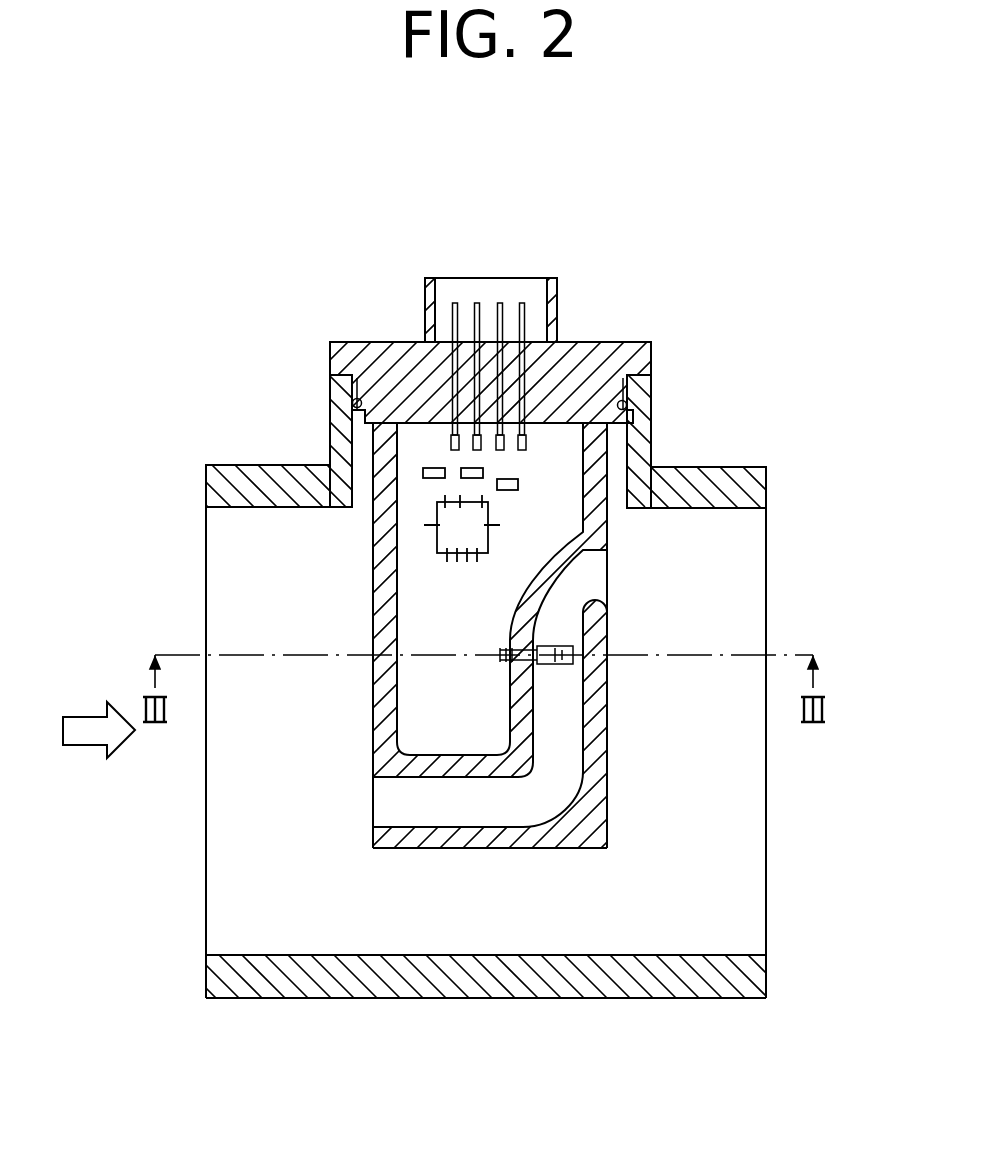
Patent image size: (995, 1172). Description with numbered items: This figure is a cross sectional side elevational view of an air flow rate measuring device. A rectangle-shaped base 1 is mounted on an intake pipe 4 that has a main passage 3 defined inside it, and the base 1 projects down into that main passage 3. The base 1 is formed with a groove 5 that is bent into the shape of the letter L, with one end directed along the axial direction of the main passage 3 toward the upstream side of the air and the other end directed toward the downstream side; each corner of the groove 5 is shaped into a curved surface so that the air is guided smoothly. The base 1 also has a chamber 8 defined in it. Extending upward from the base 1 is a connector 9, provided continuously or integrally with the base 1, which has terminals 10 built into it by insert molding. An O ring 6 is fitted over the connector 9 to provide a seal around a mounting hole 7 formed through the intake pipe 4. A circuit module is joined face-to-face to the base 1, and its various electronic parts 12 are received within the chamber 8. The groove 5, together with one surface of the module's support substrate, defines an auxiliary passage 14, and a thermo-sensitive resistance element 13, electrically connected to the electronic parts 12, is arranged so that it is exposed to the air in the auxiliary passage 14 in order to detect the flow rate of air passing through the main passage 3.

The base 1 is at (592, 826).
The main passage 3 is at (732, 510).
The intake pipe 4 is at (684, 467).
The groove 5 is at (440, 827).
The O ring 6 is at (352, 405).
The mounting hole 7 is at (630, 383).
The chamber 8 is at (400, 592).
The connector 9 is at (425, 303).
The terminals 10 is at (457, 303).
The electronic parts 12 is at (432, 470).
The thermo-sensitive resistance element 13 is at (560, 660).
The auxiliary passage 14 is at (550, 797).